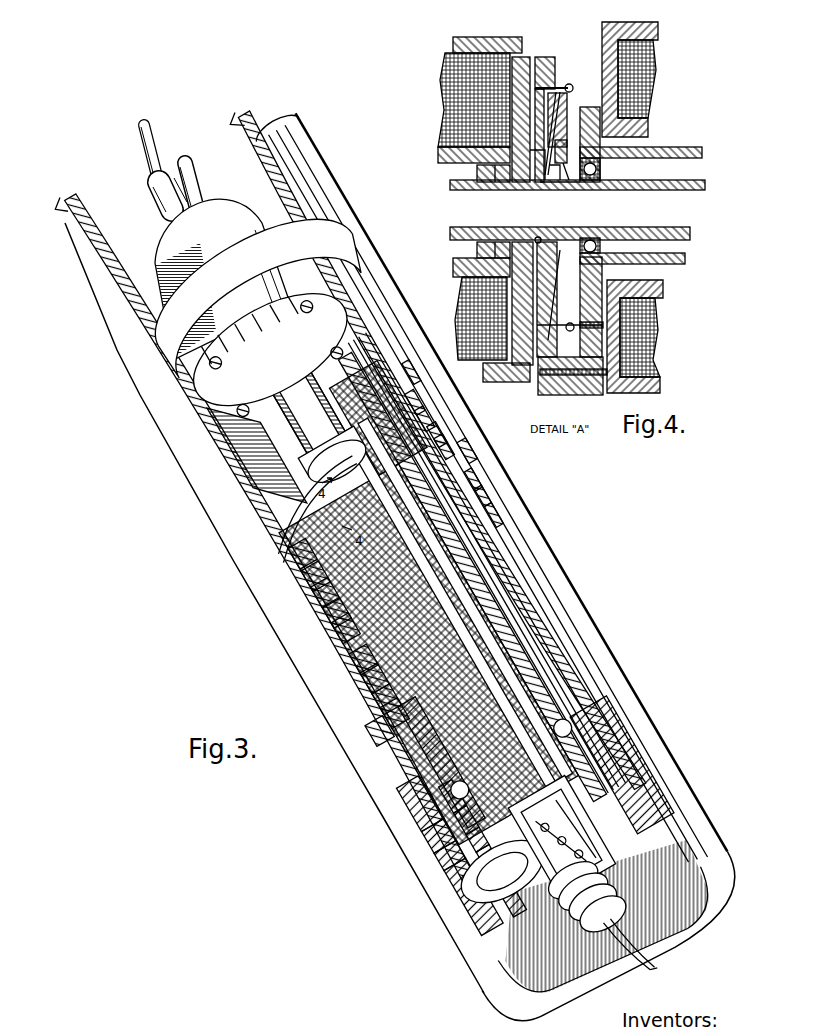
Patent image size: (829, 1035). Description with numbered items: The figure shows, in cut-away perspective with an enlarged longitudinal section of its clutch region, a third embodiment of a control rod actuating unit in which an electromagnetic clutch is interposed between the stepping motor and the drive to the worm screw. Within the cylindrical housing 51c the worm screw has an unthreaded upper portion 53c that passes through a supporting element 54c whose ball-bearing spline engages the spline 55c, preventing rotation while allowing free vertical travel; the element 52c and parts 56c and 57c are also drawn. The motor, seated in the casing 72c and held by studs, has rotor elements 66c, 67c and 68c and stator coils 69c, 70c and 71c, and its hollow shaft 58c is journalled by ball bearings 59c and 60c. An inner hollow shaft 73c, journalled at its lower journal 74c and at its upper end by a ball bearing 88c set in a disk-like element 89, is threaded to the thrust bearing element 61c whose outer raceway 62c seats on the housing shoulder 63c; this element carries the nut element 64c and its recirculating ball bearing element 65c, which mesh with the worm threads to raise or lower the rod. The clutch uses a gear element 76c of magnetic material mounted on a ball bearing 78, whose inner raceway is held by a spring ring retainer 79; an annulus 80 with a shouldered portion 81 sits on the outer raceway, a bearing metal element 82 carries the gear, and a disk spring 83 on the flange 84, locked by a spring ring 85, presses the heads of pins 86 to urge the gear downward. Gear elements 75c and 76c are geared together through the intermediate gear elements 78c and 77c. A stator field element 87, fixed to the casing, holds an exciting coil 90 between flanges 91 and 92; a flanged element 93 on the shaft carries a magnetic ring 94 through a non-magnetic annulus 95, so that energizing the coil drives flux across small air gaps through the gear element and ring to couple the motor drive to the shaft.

In FIG. 3, the cylindrical housing 51c is at (410, 341).
In FIG. 3, the end cap lead 52c is at (625, 897).
In FIG. 3, the unthreaded upper portion of worm screw rod 53c is at (270, 412).
In FIG. 3, the supporting element 54c is at (186, 338).
In FIG. 3, the spline 55c is at (236, 404).
In FIG. 3, the ball 56c is at (587, 730).
In FIG. 3, the inner casing 57c is at (543, 587).
In FIG. 3, the hollow motor shaft 58c is at (530, 563).
In FIG. 4, the hollow motor shaft 58c is at (657, 155).
In FIG. 3, the ball bearing 59c is at (500, 533).
In FIG. 4, the ball bearing 59c is at (588, 178).
In FIG. 3, the ball bearing 60c is at (560, 655).
In FIG. 3, the ball thrust bearing element 61c is at (460, 847).
In FIG. 3, the outer raceway 62c is at (423, 787).
In FIG. 3, the shoulder 63c is at (453, 828).
In FIG. 3, the nut element 64c is at (473, 867).
In FIG. 3, the recirculating ball bearing element 65c is at (567, 810).
In FIG. 3, the rotor element 66c is at (337, 633).
In FIG. 3, the rotor element 67c is at (380, 703).
In FIG. 3, the rotor element 68c is at (383, 720).
In FIG. 3, the stator coil 69c is at (330, 617).
In FIG. 4, the stator coil 69c is at (653, 77).
In FIG. 3, the stator coil 70c is at (350, 667).
In FIG. 3, the stator coil 71c is at (380, 730).
In FIG. 3, the motor casing 72c is at (520, 547).
In FIG. 3, the inner hollow shaft 73c is at (573, 625).
In FIG. 4, the inner hollow shaft 73c is at (690, 232).
In FIG. 3, the journal 74c is at (563, 673).
In FIG. 3, the gear element 75c is at (490, 515).
In FIG. 4, the gear element 75c is at (588, 106).
In FIG. 3, the gear element 76c is at (305, 552).
In FIG. 4, the gear element 76c is at (543, 55).
In FIG. 3, the gear element 77c is at (325, 571).
In FIG. 4, the gear element 77c is at (558, 381).
In FIG. 3, the intermediate gear element 78c is at (323, 594).
In FIG. 4, the intermediate gear element 78c is at (597, 316).
In FIG. 3, the ball bearing 78 is at (473, 478).
In FIG. 4, the ball bearing 78 is at (545, 188).
In FIG. 4, the spring ring retainer 79 is at (538, 240).
In FIG. 4, the annulus 80 is at (533, 158).
In FIG. 4, the shouldered portion 81 is at (553, 168).
In FIG. 4, the bearing metal element 82 is at (552, 127).
In FIG. 3, the disk spring 83 is at (480, 497).
In FIG. 4, the disk spring 83 is at (560, 105).
In FIG. 4, the flange 84 is at (564, 164).
In FIG. 4, the spring ring 85 is at (560, 143).
In FIG. 4, the pins 86 is at (556, 88).
In FIG. 3, the stator field element 87 is at (427, 417).
In FIG. 3, the ball bearing 88c is at (417, 369).
In FIG. 3, the disk-like element 89 is at (420, 400).
In FIG. 3, the exciting coil 90 is at (452, 442).
In FIG. 4, the exciting coil 90 is at (440, 93).
In FIG. 3, the field element flange 91 is at (476, 446).
In FIG. 4, the field element flange 91 is at (454, 44).
In FIG. 3, the field element flange 92 is at (445, 430).
In FIG. 4, the field element flange 92 is at (438, 153).
In FIG. 4, the flanged element 93 is at (478, 248).
In FIG. 4, the magnetic ring 94 is at (513, 375).
In FIG. 4, the non-magnetic annulus 95 is at (500, 58).